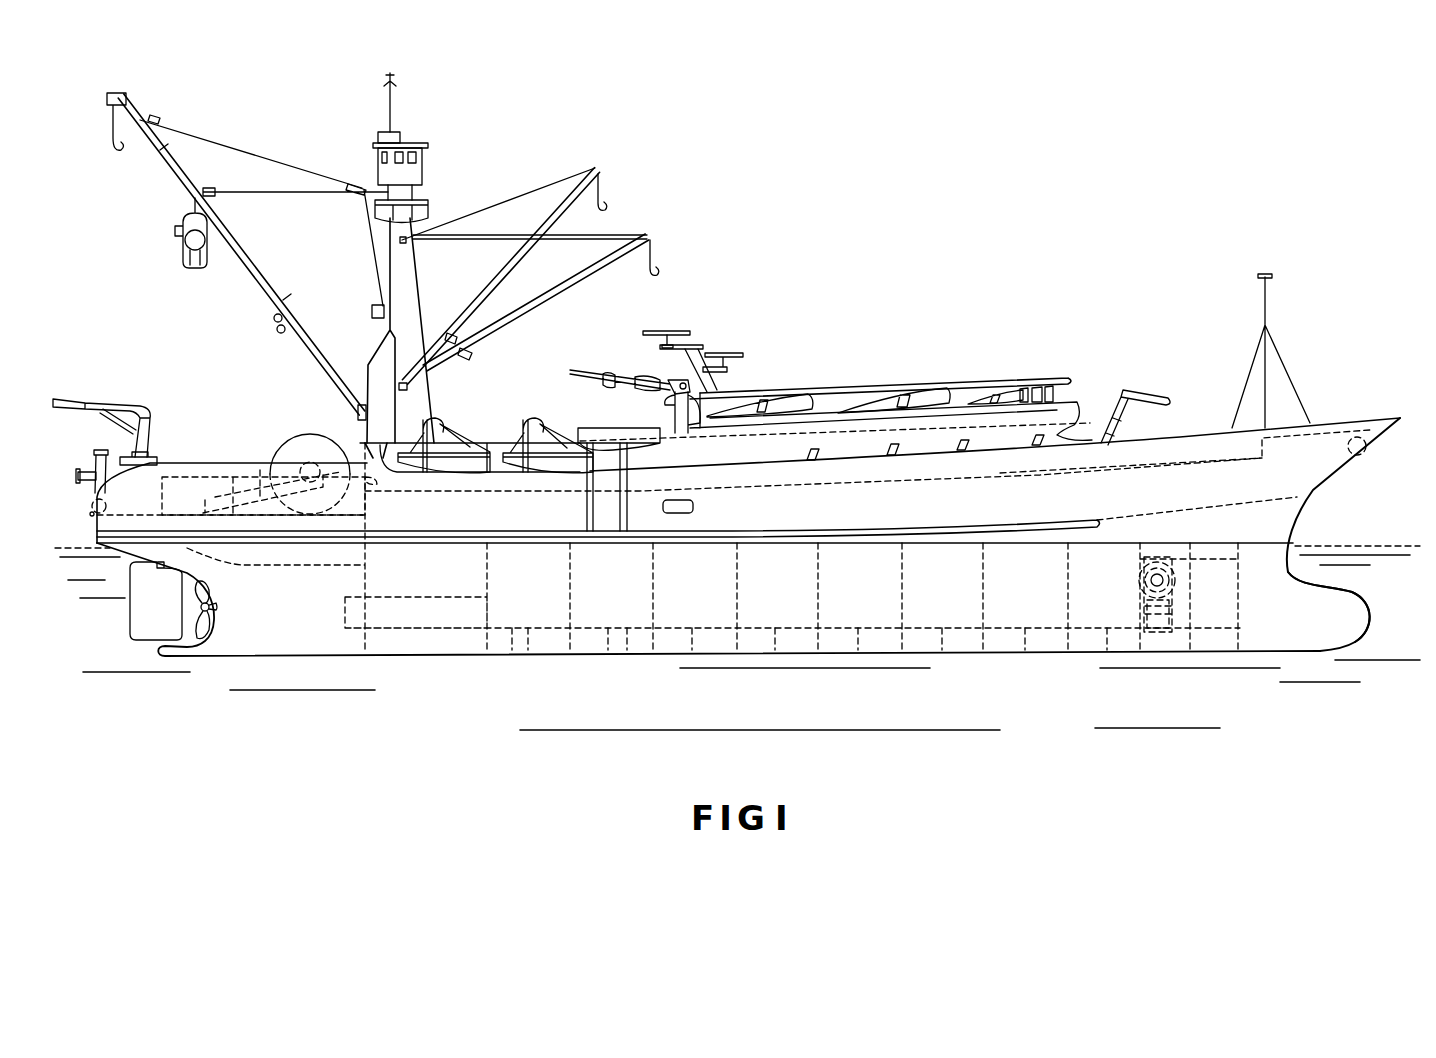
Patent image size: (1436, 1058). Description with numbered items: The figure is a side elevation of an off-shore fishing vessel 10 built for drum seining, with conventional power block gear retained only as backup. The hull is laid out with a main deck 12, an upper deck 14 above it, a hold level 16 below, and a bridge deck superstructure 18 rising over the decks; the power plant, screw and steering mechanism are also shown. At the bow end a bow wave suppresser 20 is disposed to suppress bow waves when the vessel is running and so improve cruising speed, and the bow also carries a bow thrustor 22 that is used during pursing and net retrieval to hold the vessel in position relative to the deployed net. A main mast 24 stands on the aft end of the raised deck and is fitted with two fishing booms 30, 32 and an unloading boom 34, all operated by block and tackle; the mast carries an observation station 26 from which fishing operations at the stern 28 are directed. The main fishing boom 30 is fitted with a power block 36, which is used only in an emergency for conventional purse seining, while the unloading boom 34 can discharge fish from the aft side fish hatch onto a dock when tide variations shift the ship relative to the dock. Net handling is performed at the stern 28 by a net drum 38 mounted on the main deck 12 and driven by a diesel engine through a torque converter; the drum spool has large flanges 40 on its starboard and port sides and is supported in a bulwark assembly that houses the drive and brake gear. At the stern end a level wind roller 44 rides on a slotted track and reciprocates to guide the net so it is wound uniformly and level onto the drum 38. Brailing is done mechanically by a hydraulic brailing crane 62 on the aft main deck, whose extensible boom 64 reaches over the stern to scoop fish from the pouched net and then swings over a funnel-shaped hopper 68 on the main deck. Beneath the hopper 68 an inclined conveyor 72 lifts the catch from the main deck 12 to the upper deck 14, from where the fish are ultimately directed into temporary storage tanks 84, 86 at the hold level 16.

The vessel 10 is at (1140, 229).
The main deck 12 is at (1297, 497).
The upper deck 14 is at (1372, 444).
The hold level 16 is at (515, 630).
The bridge deck superstructure 18 is at (1025, 382).
The bow wave suppresser 20 is at (1356, 604).
The bow thrustor 22 is at (1160, 633).
The main mast 24 is at (415, 294).
The observation station 26 is at (423, 173).
The stern 28 is at (122, 413).
The main fishing boom 30 is at (290, 303).
The fishing boom 32 is at (507, 276).
The unloading boom 34 is at (580, 284).
The power block 36 is at (180, 262).
The net drum 38 is at (312, 462).
The flanges 40 is at (308, 436).
The level wind roller 44 is at (95, 460).
The brailing crane 62 is at (150, 458).
The extensible boom 64 is at (135, 404).
The hopper 68 is at (205, 476).
The conveyor 72 is at (237, 494).
The temporary storage tank 84 is at (547, 597).
The temporary storage tank 86 is at (628, 597).